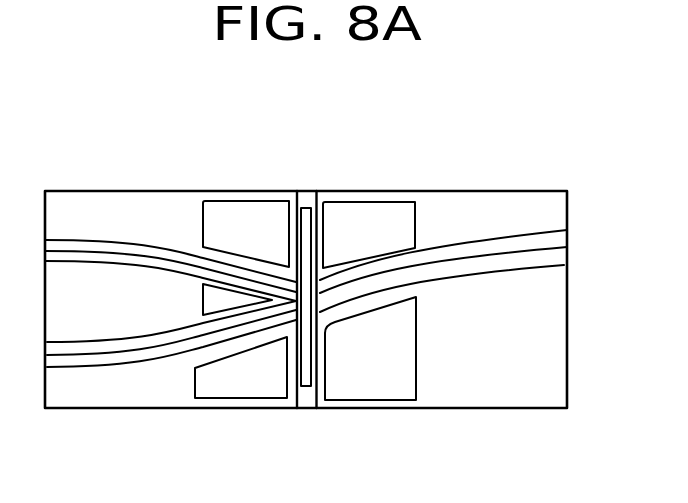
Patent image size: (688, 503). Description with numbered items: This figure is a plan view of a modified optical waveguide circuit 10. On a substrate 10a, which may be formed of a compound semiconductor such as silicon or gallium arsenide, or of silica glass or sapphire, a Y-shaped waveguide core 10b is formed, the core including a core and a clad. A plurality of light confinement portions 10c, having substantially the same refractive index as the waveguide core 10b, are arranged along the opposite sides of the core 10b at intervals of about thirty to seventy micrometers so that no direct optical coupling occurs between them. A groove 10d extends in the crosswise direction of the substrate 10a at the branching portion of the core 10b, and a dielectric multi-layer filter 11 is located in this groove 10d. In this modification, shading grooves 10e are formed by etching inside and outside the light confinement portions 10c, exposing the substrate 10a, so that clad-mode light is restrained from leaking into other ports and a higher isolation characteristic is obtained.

The optical waveguide circuit 10 is at (256, 182).
The substrate 10a is at (492, 380).
The waveguide core 10b is at (132, 252).
The light confinement portions 10c is at (76, 261).
The groove 10d is at (314, 200).
The shading grooves 10e is at (203, 306).
The dielectric multi-layer filter 11 is at (305, 386).